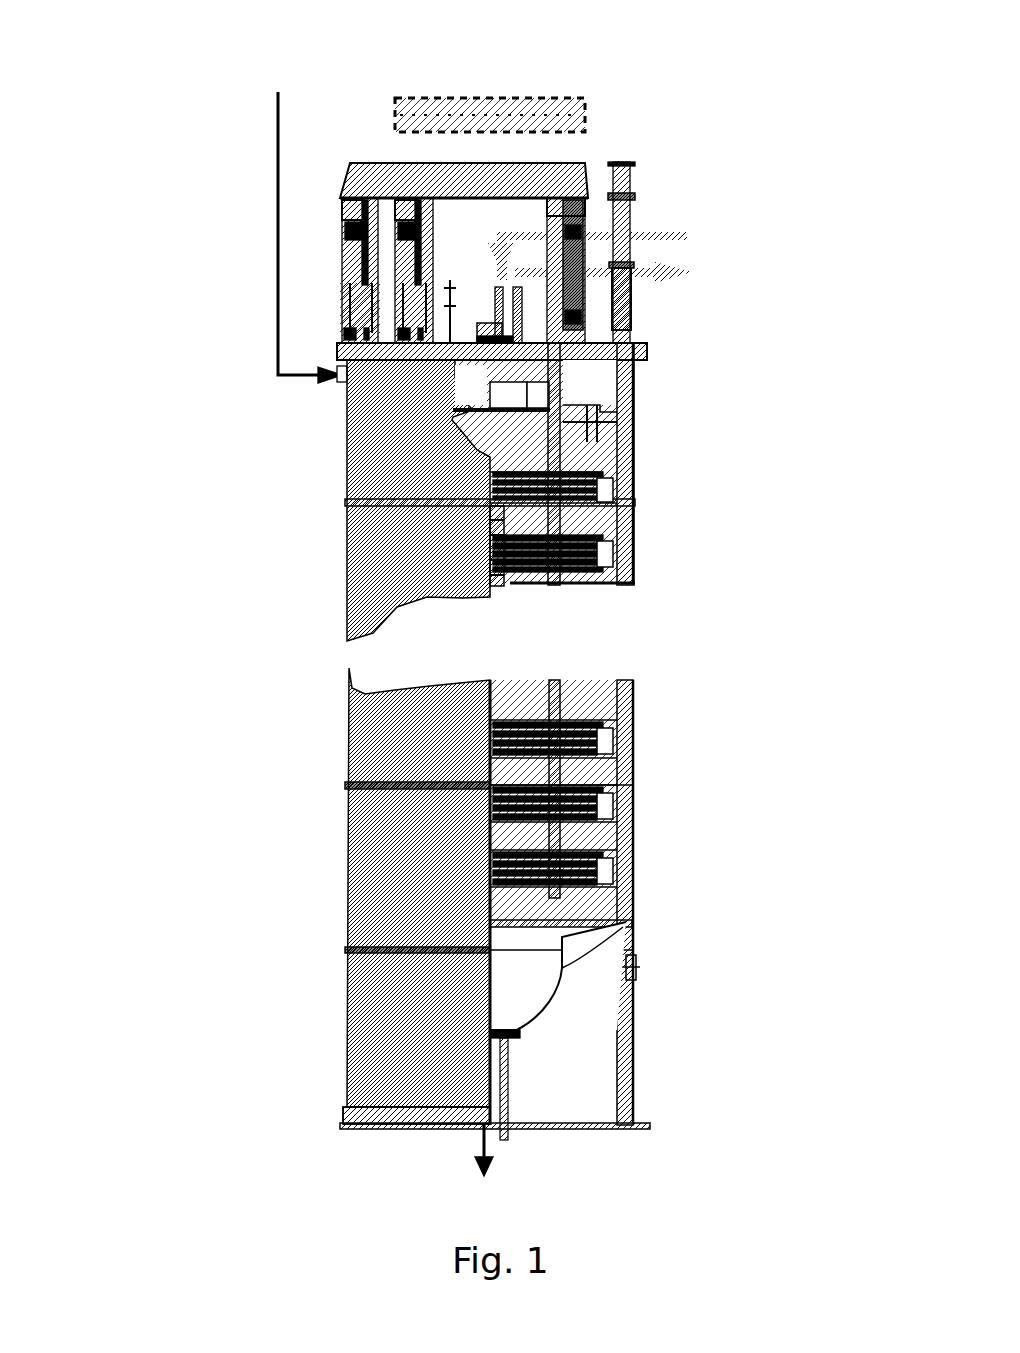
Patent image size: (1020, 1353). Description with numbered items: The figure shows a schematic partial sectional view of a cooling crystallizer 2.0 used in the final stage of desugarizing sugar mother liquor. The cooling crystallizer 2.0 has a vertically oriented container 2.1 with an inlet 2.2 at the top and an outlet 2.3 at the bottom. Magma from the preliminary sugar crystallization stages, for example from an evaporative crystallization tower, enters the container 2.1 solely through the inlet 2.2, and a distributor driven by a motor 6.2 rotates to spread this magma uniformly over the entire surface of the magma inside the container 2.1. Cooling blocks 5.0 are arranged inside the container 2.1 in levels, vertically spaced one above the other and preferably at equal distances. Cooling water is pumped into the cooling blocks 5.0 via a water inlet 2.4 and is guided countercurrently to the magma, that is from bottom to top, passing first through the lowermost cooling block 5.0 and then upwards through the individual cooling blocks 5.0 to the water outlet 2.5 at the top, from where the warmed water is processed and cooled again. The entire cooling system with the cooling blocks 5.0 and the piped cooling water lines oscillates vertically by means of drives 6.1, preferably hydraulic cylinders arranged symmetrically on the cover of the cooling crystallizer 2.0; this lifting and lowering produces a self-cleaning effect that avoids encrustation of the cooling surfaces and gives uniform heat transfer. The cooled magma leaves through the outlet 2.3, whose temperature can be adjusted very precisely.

The cooling crystallizer 2.0 is at (423, 741).
The container 2.1 is at (347, 548).
The inlet 2.2 is at (277, 213).
The outlet 2.3 is at (488, 1148).
The water inlet 2.4 is at (625, 238).
The water outlet 2.5 is at (620, 272).
The cooling blocks 5.0 is at (585, 572).
The drives 6.1 is at (360, 260).
The motor 6.2 is at (447, 327).